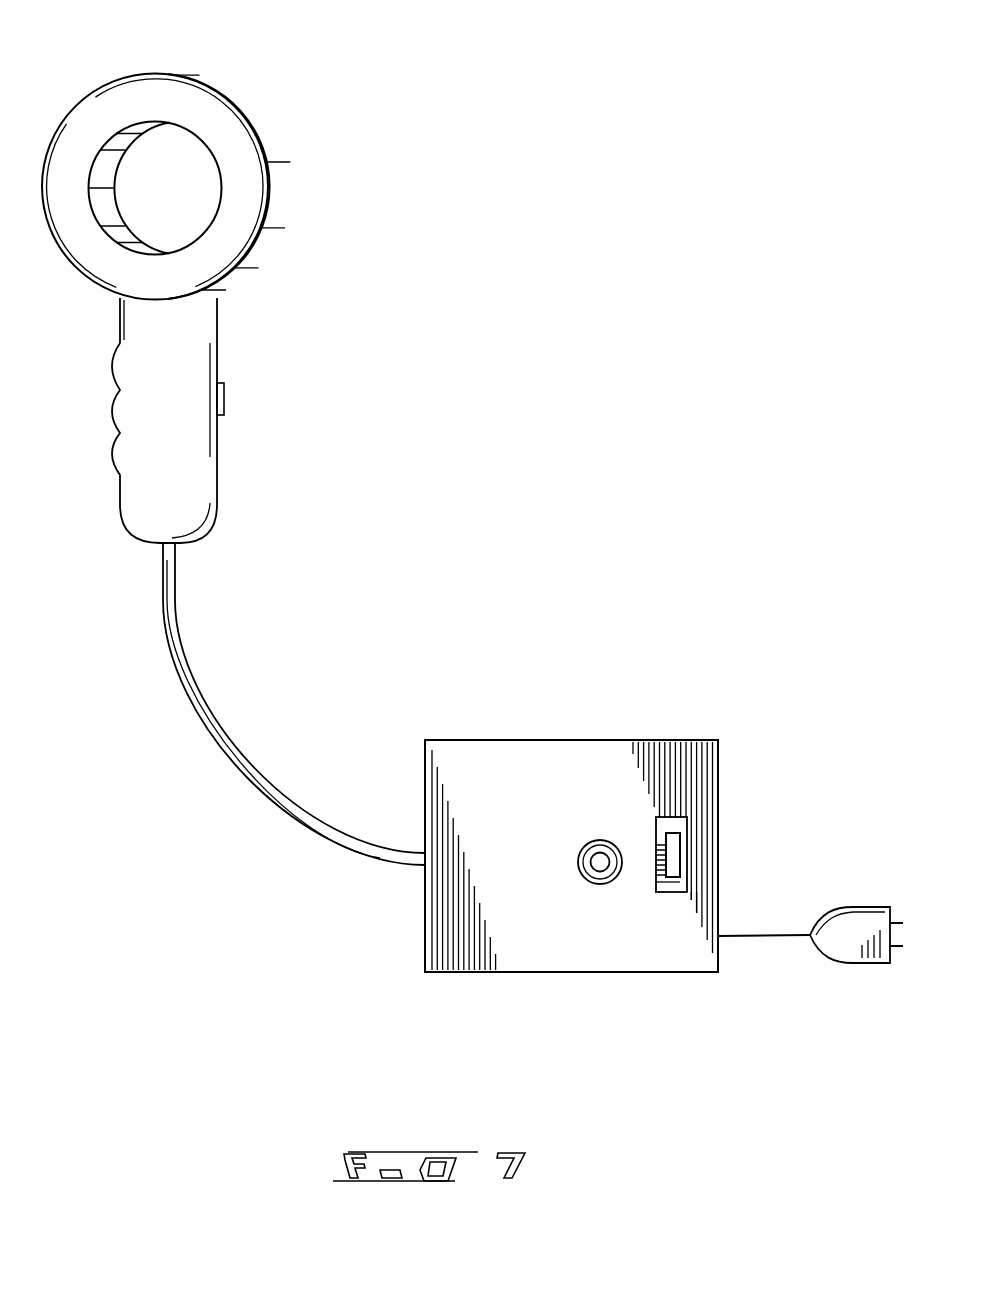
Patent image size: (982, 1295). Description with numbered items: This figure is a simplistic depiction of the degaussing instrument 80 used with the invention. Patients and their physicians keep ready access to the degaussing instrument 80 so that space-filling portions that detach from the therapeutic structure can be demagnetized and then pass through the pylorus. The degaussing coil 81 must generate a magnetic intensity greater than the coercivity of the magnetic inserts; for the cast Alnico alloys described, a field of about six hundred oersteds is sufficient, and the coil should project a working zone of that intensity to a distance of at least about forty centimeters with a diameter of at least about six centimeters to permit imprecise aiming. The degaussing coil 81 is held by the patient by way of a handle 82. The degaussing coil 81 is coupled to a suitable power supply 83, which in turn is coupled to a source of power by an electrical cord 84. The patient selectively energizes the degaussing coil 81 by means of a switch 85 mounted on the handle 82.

The degaussing instrument 80 is at (277, 70).
The degaussing coil 81 is at (240, 140).
The handle 82 is at (185, 433).
The power supply 83 is at (538, 853).
The electrical cord 84 is at (753, 932).
The switch 85 is at (226, 394).